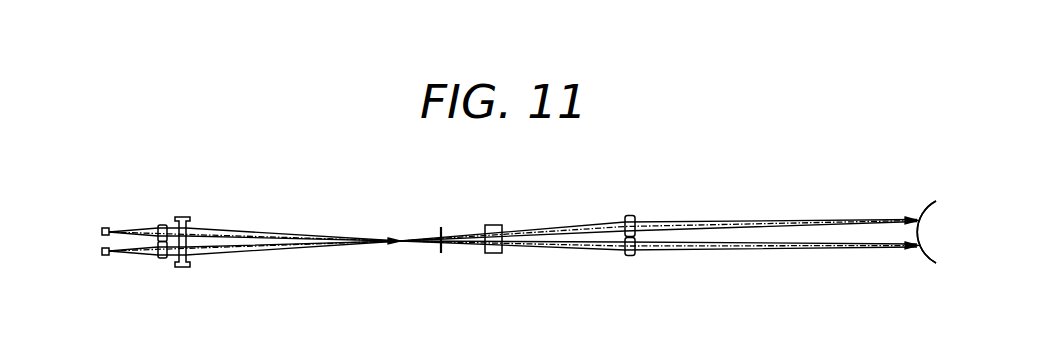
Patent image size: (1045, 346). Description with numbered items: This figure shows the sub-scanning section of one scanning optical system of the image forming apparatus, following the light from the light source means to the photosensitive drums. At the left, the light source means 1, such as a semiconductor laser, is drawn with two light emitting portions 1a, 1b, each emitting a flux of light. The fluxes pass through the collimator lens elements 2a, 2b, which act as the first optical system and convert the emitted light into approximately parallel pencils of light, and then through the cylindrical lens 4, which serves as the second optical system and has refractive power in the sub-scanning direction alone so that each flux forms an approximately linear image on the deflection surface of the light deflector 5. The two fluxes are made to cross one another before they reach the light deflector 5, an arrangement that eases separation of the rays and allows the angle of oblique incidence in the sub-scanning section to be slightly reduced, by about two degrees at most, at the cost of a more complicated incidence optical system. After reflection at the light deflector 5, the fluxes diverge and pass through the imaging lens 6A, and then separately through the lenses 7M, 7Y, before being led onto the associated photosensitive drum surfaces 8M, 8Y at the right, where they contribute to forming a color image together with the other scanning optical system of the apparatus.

The light source means 1 is at (77, 192).
The light emitting portion (semiconductor laser) 1a is at (102, 229).
The light emitting portion (semiconductor laser) 1b is at (102, 255).
The collimator lens 2a is at (161, 225).
The collimator lens 2b is at (162, 258).
The cylindrical lens 4 is at (190, 266).
The light deflector 5 is at (441, 226).
The imaging lens (f-theta lens) 6A is at (493, 225).
The imaging lens for magenta 7M is at (630, 215).
The imaging lens for yellow 7Y is at (630, 256).
The photosensitive drum surface 8M is at (920, 212).
The photosensitive drum surface 8Y is at (907, 213).